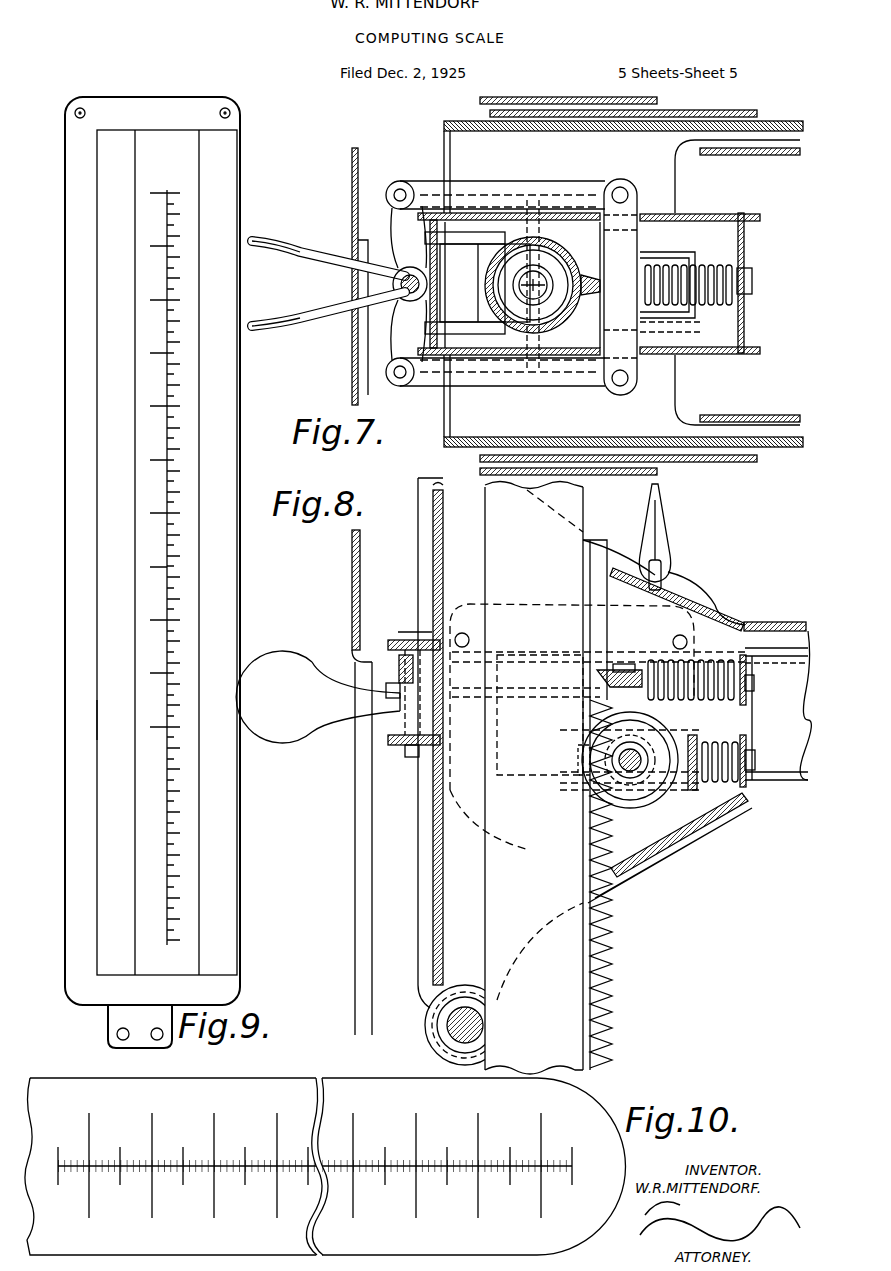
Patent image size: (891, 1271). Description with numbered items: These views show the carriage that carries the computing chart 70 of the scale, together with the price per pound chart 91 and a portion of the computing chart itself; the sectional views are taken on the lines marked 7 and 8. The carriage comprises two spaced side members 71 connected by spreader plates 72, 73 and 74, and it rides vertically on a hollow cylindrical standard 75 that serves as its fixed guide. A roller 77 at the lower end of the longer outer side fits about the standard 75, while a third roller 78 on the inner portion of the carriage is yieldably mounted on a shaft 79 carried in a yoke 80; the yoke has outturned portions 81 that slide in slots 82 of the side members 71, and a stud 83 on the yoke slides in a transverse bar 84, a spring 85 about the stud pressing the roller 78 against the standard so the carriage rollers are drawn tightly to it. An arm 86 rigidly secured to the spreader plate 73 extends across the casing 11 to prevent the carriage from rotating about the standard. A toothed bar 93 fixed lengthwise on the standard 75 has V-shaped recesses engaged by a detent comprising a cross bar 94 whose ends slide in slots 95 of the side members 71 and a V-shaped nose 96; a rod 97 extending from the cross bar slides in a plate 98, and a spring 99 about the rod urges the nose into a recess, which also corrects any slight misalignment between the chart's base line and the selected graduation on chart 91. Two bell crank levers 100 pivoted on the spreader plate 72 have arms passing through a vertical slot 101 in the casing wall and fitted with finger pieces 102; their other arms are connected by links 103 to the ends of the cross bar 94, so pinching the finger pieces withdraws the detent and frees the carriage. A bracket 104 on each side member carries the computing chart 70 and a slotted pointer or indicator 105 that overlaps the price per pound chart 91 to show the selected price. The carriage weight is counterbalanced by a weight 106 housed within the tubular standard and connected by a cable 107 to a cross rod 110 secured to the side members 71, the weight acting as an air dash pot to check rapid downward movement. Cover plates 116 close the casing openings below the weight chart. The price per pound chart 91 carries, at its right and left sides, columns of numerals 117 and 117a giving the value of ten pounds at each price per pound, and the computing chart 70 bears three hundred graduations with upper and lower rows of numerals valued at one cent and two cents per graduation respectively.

In FIG. 8, the section line 7- 7 is at (343, 682).
In FIG. 7, the section line 8- 8 is at (382, 283).
In FIG. 7, the casing 11 is at (350, 178).
In FIG. 8, the casing 11 is at (352, 585).
In FIG. 7, the computing chart 70 is at (803, 128).
In FIG. 8, the computing chart 70 is at (801, 782).
In FIG. 10, the computing chart 70 is at (262, 1078).
In FIG. 7, the side members 71 is at (760, 218).
In FIG. 8, the side members 71 is at (625, 870).
In FIG. 7, the spreader plate 72 is at (430, 338).
In FIG. 8, the spreader plate 72 is at (440, 548).
In FIG. 8, the spreader plate 73 is at (662, 592).
In FIG. 8, the spreader plate 74 is at (685, 843).
In FIG. 7, the standard 75 is at (548, 340).
In FIG. 8, the standard 75 is at (546, 778).
In FIG. 7, the roller 77 is at (472, 256).
In FIG. 8, the roller 77 is at (430, 1036).
In FIG. 7, the third roller 78 is at (551, 254).
In FIG. 8, the third roller 78 is at (615, 813).
In FIG. 8, the shaft 79 is at (633, 750).
In FIG. 7, the yoke 80 is at (690, 262).
In FIG. 8, the yoke 80 is at (700, 724).
In FIG. 7, the outturned portions 81 is at (578, 345).
In FIG. 8, the outturned portions 81 is at (585, 790).
In FIG. 8, the slots 82 is at (578, 760).
In FIG. 8, the stud 83 is at (755, 760).
In FIG. 8, the bar 84 is at (744, 790).
In FIG. 8, the spring 85 is at (706, 783).
In FIG. 8, the arm 86 is at (778, 613).
In FIG. 7, the price per pound chart 91 is at (762, 105).
In FIG. 9, the price per pound chart 91 is at (240, 580).
In FIG. 7, the toothed bar 93 is at (550, 302).
In FIG. 8, the toothed bar 93 is at (612, 960).
In FIG. 7, the cross bar 94 is at (628, 326).
In FIG. 8, the cross bar 94 is at (620, 664).
In FIG. 7, the slots 95 is at (640, 210).
In FIG. 7, the V-shaped nose 96 is at (600, 287).
In FIG. 8, the V-shaped nose 96 is at (600, 680).
In FIG. 7, the rod 97 is at (752, 280).
In FIG. 8, the rod 97 is at (756, 683).
In FIG. 7, the plate 98 is at (746, 318).
In FIG. 8, the plate 98 is at (741, 703).
In FIG. 7, the spring 99 is at (708, 305).
In FIG. 8, the spring 99 is at (648, 660).
In FIG. 7, the bell crank levers 100 is at (345, 263).
In FIG. 8, the bell crank levers 100 is at (337, 712).
In FIG. 7, the vertical slot 101 is at (360, 313).
In FIG. 8, the vertical slot 101 is at (360, 872).
In FIG. 7, the finger pieces 102 is at (300, 250).
In FIG. 8, the finger pieces 102 is at (285, 733).
In FIG. 7, the links 103 is at (497, 185).
In FIG. 8, the links 103 is at (548, 716).
In FIG. 7, the bracket 104 is at (663, 170).
In FIG. 8, the bracket 104 is at (525, 673).
In FIG. 7, the pointer or indicator 105 is at (480, 100).
In FIG. 7, the weight 106 is at (548, 262).
In FIG. 7, the cable 107 is at (533, 270).
In FIG. 8, the cable 107 is at (662, 493).
In FIG. 8, the cross rod 110 is at (666, 573).
In FIG. 7, the cover plates 116 is at (763, 156).
In FIG. 9, the series of numerals 117 is at (238, 835).
In FIG. 9, the series of numerals 117a is at (97, 722).